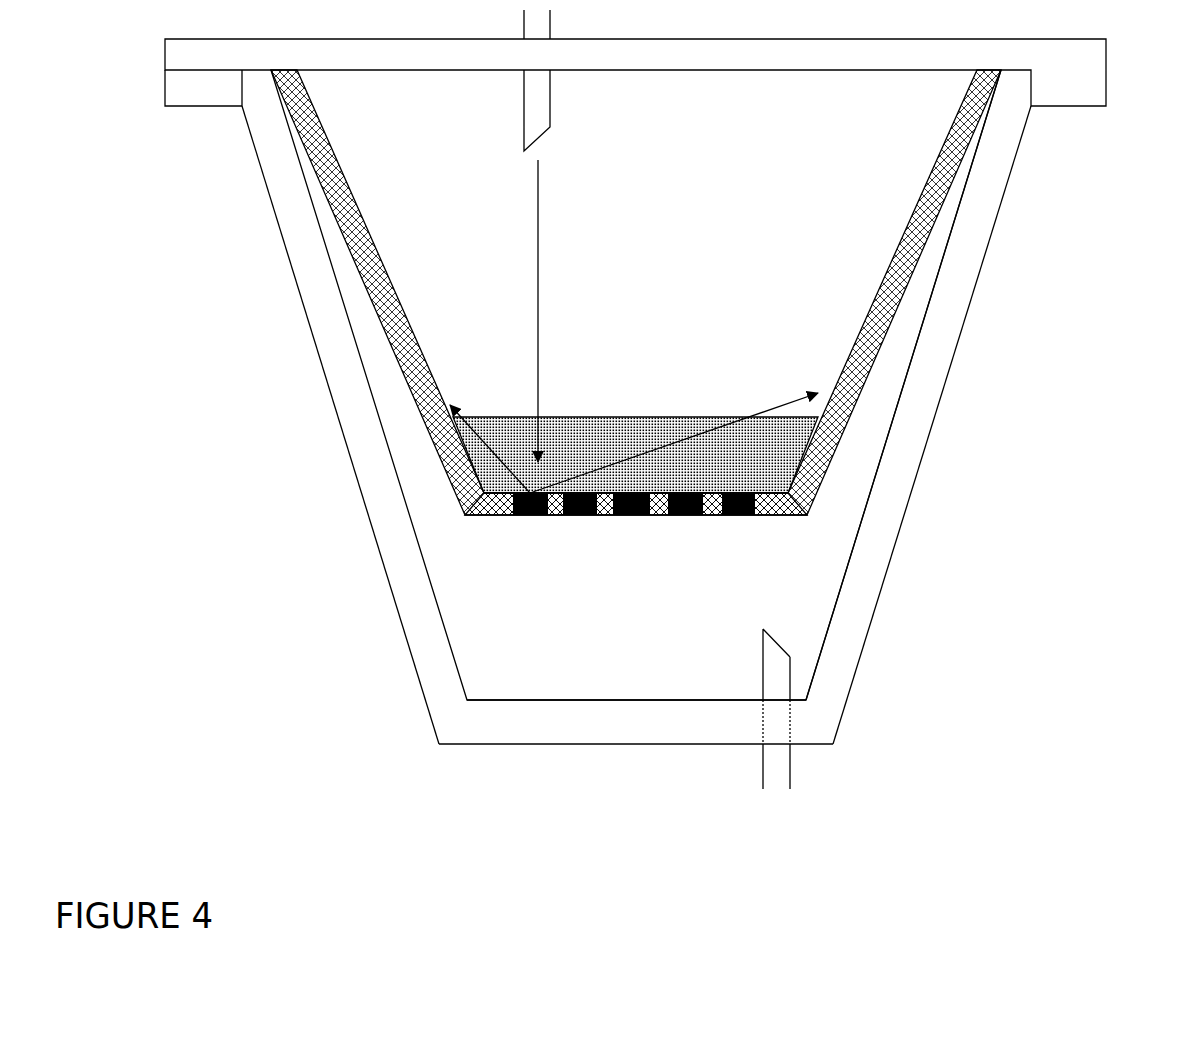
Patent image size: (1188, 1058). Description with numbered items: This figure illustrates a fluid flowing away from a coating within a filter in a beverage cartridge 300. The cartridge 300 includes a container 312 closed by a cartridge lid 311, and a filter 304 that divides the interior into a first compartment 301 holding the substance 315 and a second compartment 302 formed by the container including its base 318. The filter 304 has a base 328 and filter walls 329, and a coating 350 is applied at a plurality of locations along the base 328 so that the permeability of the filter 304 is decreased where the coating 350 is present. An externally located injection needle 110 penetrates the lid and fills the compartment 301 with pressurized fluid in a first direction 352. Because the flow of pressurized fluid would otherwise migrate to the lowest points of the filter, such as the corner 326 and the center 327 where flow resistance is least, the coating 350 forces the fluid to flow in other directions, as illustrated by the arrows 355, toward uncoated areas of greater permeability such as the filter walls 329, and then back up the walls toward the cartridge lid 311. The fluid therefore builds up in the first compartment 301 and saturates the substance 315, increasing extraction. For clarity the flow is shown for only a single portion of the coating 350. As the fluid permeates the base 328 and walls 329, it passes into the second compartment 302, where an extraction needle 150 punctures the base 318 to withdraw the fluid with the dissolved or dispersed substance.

The injection needle 110 is at (555, 125).
The extraction needle 150 is at (792, 767).
The cartridge 300 is at (612, 780).
The first compartment 301 is at (730, 205).
The second compartment 302 is at (790, 593).
The filter 304 is at (905, 285).
The cartridge lid 311 is at (1040, 52).
The container 312 is at (272, 208).
The substance 315 is at (753, 457).
The base 318 is at (513, 717).
The corner 326 is at (807, 513).
The center 327 is at (633, 515).
The base 328 is at (713, 515).
The filter walls 329 is at (950, 182).
The coating 350 is at (678, 551).
The first direction 352 is at (532, 372).
The arrows 355 is at (560, 494).